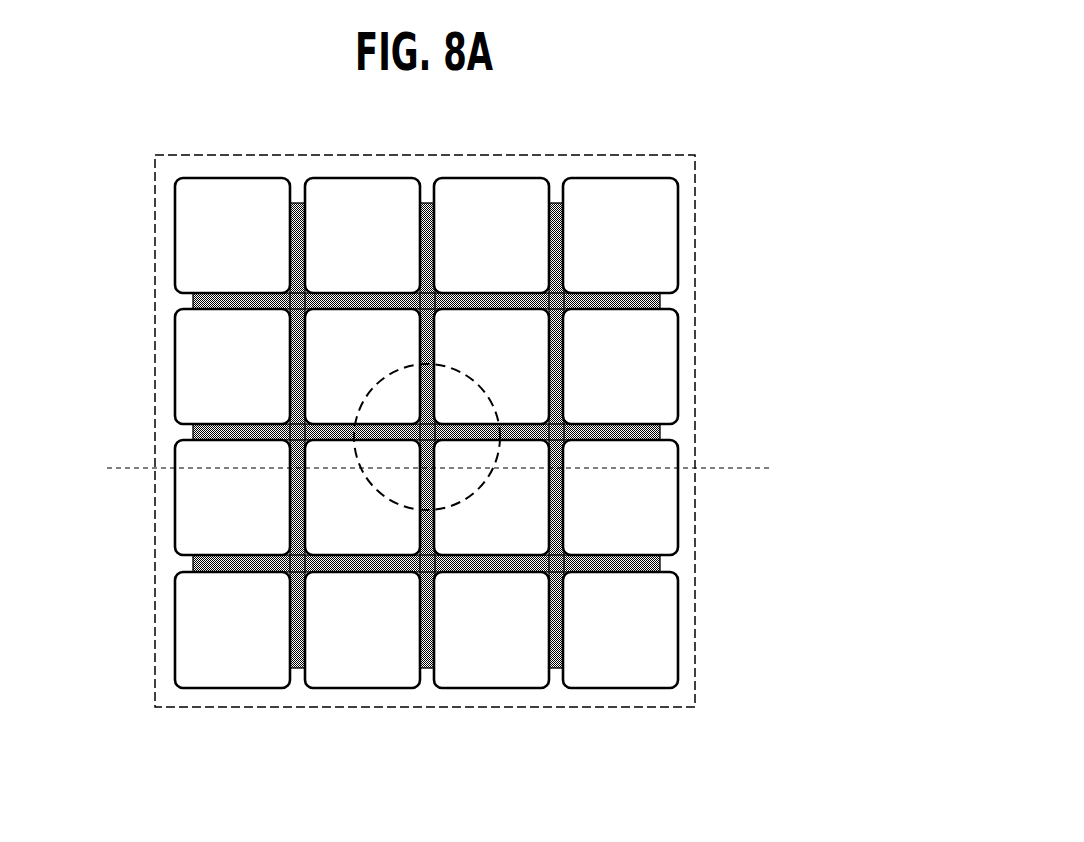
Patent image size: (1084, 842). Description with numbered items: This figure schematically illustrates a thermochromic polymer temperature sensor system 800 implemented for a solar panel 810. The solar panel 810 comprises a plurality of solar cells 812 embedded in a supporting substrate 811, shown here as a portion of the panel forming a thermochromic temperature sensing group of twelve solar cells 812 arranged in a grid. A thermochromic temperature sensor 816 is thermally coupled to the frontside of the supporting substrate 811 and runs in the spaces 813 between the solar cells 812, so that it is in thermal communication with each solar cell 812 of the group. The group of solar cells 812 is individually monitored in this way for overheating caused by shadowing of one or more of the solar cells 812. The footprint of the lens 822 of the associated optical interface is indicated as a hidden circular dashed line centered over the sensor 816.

The thermochromic polymer temperature sensor system 800 is at (440, 104).
The solar panel 810 is at (110, 167).
The supporting substrate 811 is at (157, 252).
The solar cell 812 is at (237, 190).
The space between solar cells 813 is at (300, 185).
The thermochromic temperature sensor 816 is at (193, 302).
The lens 822 is at (468, 373).